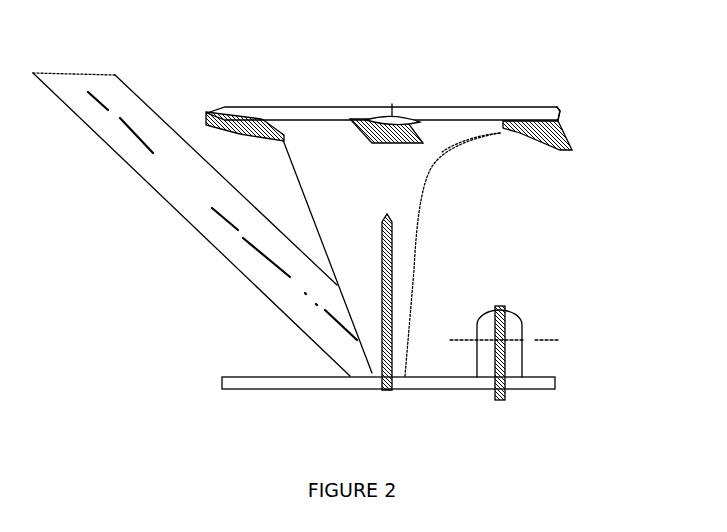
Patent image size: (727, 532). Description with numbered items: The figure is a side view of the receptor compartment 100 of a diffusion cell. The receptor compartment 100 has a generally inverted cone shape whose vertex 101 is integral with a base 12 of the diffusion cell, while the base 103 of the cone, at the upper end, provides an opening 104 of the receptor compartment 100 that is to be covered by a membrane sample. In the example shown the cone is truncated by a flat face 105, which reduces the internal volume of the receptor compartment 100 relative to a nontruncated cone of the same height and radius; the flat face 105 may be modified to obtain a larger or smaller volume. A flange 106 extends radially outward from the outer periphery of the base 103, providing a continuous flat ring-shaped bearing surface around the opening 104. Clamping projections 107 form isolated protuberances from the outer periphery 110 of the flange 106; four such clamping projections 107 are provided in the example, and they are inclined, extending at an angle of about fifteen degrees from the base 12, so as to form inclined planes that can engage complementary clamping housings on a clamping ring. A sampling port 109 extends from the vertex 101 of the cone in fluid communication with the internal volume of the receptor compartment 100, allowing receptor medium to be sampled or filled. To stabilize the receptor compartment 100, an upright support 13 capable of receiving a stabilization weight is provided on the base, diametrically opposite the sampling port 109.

The base 12 is at (567, 393).
The upright support 13 is at (528, 310).
The receptor compartment 100 is at (452, 236).
The vertex 101 is at (404, 366).
The base of the cone 103 is at (467, 138).
The opening 104 is at (501, 70).
The flat face 105 is at (429, 265).
The flange 106 is at (284, 95).
The clamping projections 107 is at (212, 110).
The sampling port 109 is at (170, 181).
The outer periphery 110 is at (571, 106).